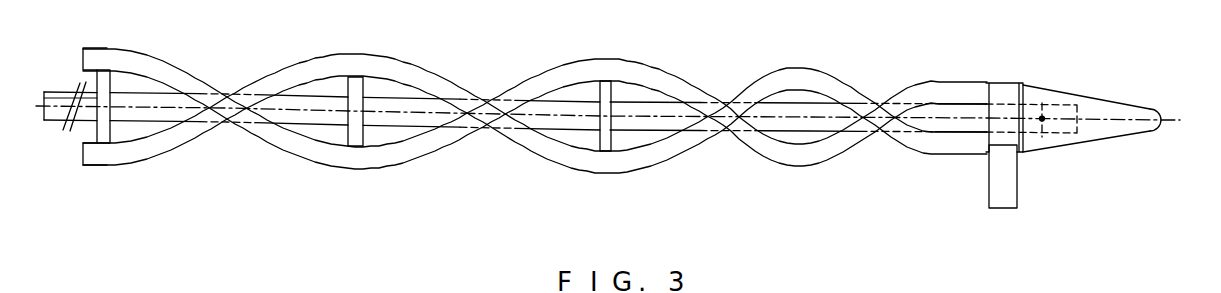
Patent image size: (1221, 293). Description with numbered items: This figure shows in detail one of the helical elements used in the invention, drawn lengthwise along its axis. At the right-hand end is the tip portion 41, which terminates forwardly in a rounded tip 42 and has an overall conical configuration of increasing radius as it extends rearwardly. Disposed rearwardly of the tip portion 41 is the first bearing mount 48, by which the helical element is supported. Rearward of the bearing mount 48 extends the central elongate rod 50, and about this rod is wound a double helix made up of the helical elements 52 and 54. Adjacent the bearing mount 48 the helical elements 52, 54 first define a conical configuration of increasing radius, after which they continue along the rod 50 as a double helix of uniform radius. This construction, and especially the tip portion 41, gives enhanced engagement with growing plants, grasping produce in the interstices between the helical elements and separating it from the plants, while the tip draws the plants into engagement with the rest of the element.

The tip portion 41 is at (1125, 138).
The rounded tip 42 is at (1162, 118).
The first bearing mount 48 is at (1000, 93).
The central elongate rod 50 is at (653, 112).
The helical element 52 is at (365, 62).
The helical element 54 is at (373, 157).